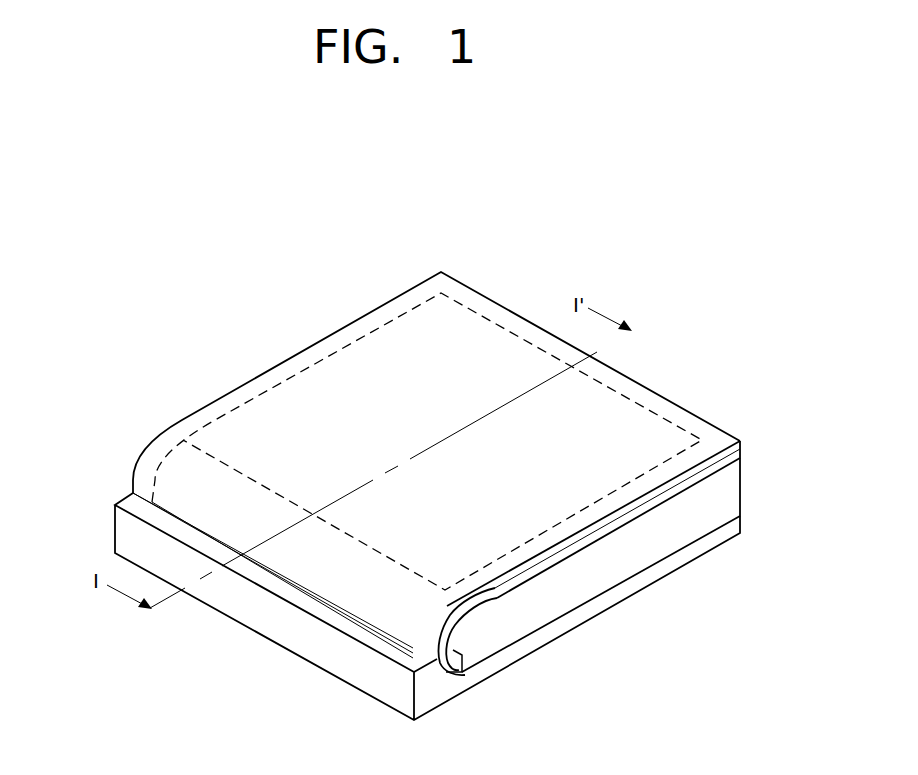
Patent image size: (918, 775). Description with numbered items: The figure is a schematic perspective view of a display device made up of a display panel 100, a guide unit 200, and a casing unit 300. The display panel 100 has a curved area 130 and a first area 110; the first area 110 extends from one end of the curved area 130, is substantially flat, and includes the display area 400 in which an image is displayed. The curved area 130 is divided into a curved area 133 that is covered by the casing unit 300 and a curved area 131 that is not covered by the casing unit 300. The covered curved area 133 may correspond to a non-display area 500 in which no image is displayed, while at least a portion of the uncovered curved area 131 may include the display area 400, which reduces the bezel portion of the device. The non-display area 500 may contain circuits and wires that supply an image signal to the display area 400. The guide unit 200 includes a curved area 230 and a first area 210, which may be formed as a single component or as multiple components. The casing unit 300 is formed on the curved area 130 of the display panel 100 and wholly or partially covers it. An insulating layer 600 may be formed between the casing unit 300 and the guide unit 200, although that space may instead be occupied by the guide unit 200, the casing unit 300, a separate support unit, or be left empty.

The display panel 100 is at (512, 492).
The first area 110 is at (507, 597).
The curved area 130 is at (438, 538).
The curved area 131 is at (431, 640).
The curved area 133 is at (447, 682).
The guide unit 200 is at (593, 589).
The first area 210 is at (560, 560).
The curved area 230 is at (473, 665).
The casing unit 300 is at (137, 532).
The display area 400 is at (600, 407).
The non-display area 500 is at (693, 428).
The insulating layer 600 is at (725, 506).